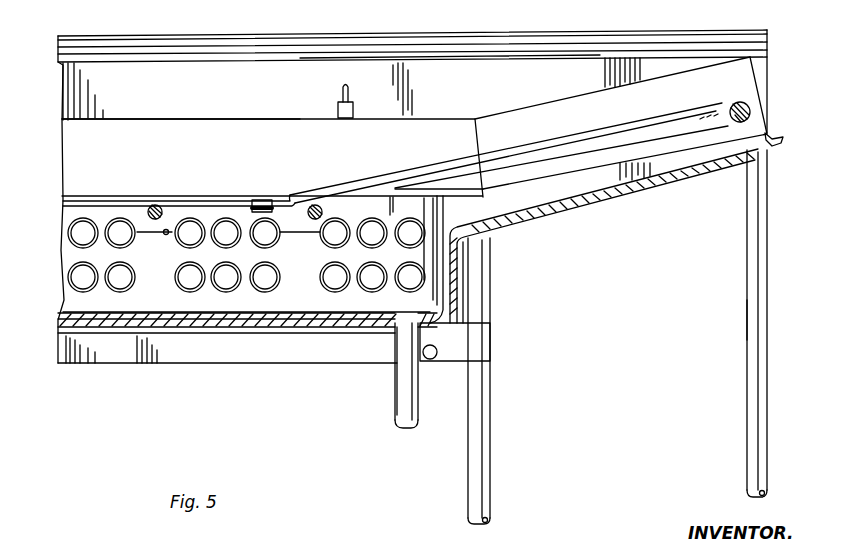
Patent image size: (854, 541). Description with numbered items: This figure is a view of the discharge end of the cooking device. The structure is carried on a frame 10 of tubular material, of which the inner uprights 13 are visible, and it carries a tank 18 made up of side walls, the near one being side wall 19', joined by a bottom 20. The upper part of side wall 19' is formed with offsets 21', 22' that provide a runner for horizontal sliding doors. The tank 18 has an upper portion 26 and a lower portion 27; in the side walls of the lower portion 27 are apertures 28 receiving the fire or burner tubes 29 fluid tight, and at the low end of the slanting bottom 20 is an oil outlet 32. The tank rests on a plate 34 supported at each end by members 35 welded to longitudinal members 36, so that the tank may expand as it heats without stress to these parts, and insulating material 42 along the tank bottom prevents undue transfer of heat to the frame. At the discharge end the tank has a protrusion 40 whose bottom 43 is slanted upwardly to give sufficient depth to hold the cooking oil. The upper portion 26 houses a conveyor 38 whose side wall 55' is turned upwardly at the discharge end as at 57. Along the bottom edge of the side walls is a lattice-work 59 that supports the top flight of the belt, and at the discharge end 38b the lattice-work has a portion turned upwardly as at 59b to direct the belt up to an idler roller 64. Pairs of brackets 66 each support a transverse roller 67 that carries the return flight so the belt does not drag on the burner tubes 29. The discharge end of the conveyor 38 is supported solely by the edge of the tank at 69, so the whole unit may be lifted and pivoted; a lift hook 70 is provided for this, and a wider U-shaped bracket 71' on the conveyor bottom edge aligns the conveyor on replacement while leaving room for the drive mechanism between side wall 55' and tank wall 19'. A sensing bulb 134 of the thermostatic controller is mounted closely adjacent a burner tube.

The frame 10 is at (742, 324).
The inner uprights 13 is at (743, 246).
The tank 18 is at (776, 65).
The side wall 19' is at (62, 91).
The bottom 20 is at (325, 318).
The offset 21' is at (412, 69).
The offset 22' is at (412, 32).
The upper portion 26 is at (312, 78).
The lower portion 27 is at (133, 313).
The apertures 28 is at (320, 268).
The burner tubes 29 is at (173, 290).
The oil outlet 32 is at (396, 371).
The plate 34 is at (197, 333).
The members 35 is at (438, 352).
The longitudinal members 36 is at (285, 364).
The conveyor 38 is at (268, 118).
The discharge end of conveyor 38b is at (755, 97).
The protrusion 40 is at (603, 189).
The insulating material 42 is at (261, 333).
The bottom of protrusion 43 is at (537, 212).
The side wall of conveyor 55' is at (181, 113).
The upturned end 57 is at (553, 106).
The lattice-work 59 is at (232, 200).
The upturned portion of lattice-work 59b is at (515, 147).
The idler roller 64 is at (745, 103).
The brackets 66 is at (153, 205).
The transverse roller 67 is at (322, 209).
The edge of the tank 69 is at (770, 133).
The lift hook 70 is at (349, 93).
The U-shaped bracket 71' is at (269, 194).
The sensing bulb 134 is at (167, 240).